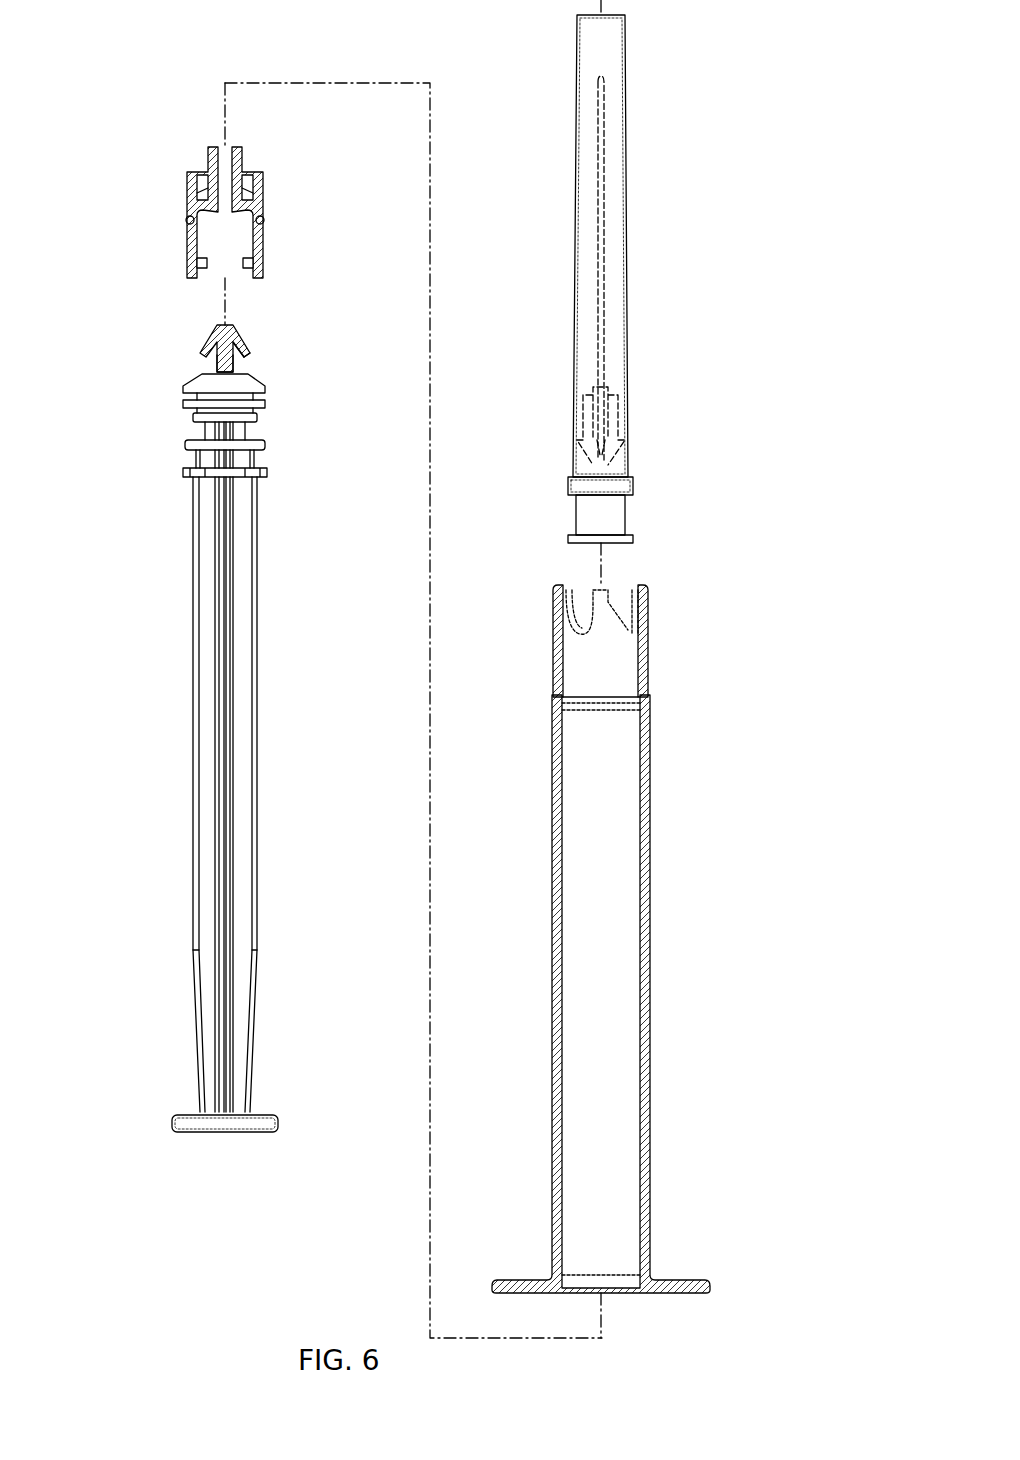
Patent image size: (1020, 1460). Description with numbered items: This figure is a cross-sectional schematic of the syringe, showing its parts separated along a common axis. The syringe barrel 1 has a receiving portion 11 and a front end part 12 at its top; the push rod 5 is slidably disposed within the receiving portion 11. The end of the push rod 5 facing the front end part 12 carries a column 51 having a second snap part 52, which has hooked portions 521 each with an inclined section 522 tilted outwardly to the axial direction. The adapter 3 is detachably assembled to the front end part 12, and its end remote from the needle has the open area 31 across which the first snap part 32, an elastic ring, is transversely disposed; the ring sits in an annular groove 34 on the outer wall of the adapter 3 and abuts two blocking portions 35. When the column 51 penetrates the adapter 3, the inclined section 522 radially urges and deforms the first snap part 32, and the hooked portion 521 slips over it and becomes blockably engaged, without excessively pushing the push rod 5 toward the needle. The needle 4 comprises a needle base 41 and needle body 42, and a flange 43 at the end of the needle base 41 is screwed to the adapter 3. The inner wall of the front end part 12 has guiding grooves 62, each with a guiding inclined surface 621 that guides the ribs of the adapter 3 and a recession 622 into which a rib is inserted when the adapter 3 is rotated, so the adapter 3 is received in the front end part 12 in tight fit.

The syringe barrel 1 is at (606, 931).
The receiving portion 11 is at (615, 994).
The front end part 12 is at (583, 633).
The adapter 3 is at (224, 234).
The open area 31 is at (240, 282).
The first snap part 32 is at (250, 266).
The annular groove 34 is at (190, 266).
The blocking portion 35 is at (222, 262).
The needle 4 is at (676, 280).
The needle base 41 is at (617, 510).
The needle body 42 is at (602, 352).
The flange 43 is at (652, 518).
The push rod 5 is at (233, 713).
The column 51 is at (215, 362).
The second snap part 52 is at (233, 344).
The hooked portion 521 is at (245, 357).
The inclined section 522 is at (236, 342).
The guiding groove 62 is at (533, 604).
The guiding inclined surface 621 is at (615, 622).
The recession 622 is at (602, 598).